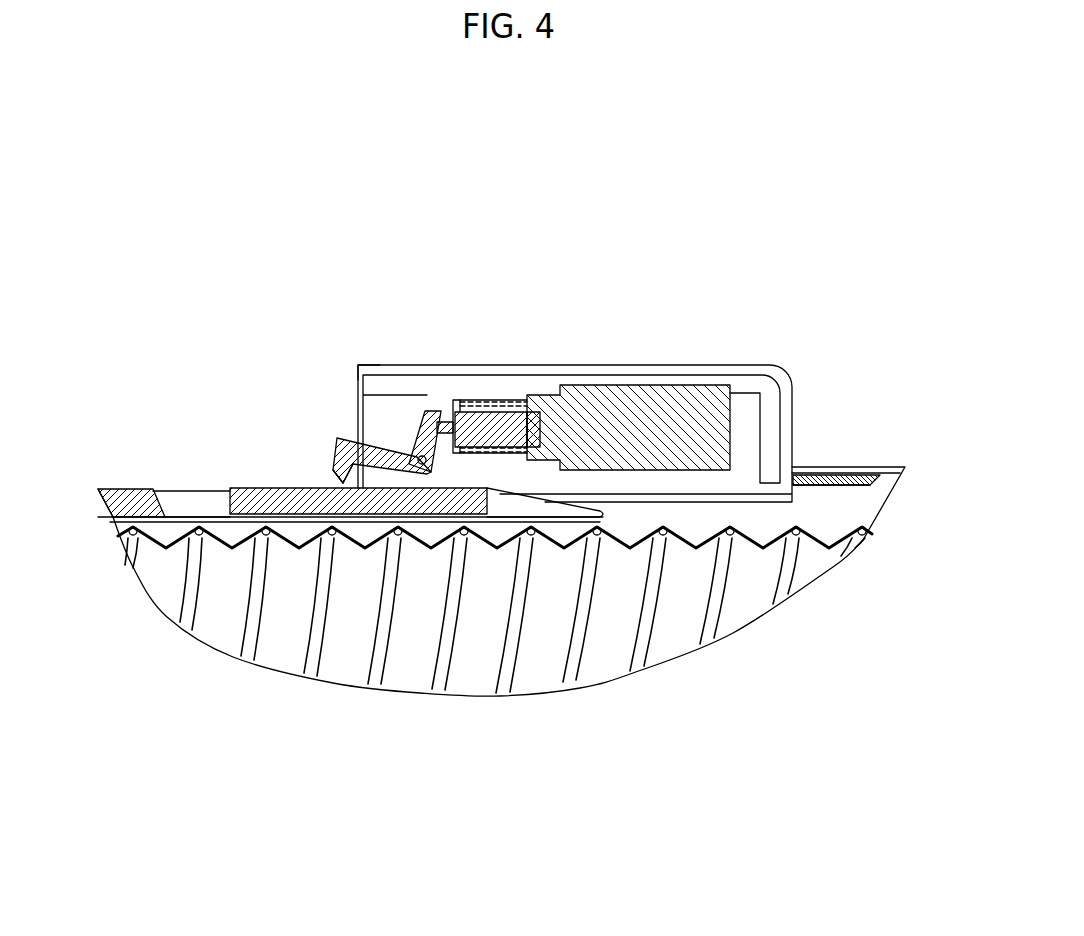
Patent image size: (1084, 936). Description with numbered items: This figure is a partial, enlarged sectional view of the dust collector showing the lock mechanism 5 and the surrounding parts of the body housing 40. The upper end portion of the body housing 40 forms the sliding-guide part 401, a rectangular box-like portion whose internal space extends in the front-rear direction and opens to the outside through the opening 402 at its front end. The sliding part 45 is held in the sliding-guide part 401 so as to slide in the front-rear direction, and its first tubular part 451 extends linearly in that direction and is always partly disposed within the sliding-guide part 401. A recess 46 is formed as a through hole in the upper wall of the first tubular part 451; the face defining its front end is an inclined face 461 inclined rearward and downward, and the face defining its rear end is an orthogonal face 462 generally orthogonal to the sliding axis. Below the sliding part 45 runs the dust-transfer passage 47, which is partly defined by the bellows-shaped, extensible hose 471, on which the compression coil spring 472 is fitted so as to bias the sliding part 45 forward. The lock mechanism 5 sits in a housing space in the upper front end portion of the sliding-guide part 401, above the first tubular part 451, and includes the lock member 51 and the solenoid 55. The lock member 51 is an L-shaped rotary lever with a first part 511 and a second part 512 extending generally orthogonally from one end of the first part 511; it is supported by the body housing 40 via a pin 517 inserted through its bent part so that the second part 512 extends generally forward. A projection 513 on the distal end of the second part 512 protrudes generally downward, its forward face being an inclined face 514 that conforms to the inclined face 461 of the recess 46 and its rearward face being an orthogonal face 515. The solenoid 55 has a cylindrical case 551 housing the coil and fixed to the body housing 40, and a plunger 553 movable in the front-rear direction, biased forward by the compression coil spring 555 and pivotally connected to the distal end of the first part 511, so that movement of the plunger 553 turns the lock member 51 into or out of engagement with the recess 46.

The lock mechanism 5 is at (535, 476).
The body housing 40 is at (613, 381).
The sliding-guide part 401 is at (788, 440).
The opening 402 is at (357, 366).
The sliding part 45 is at (345, 417).
The first tubular part 451 is at (416, 461).
The recess 46 is at (172, 480).
The inclined face 461 is at (167, 488).
The orthogonal face 462 is at (227, 489).
The dust-transfer passage 47 is at (485, 632).
The hose 471 is at (278, 643).
The spring 472 is at (735, 560).
The lock member 51 is at (407, 529).
The first part 511 is at (440, 414).
The second part 512 is at (378, 450).
The projection 513 is at (348, 466).
The inclined face 514 is at (338, 480).
The orthogonal face 515 is at (353, 464).
The pin 517 is at (423, 464).
The solenoid 55 is at (607, 364).
The case 551 is at (615, 413).
The plunger 553 is at (493, 412).
The spring 555 is at (465, 405).